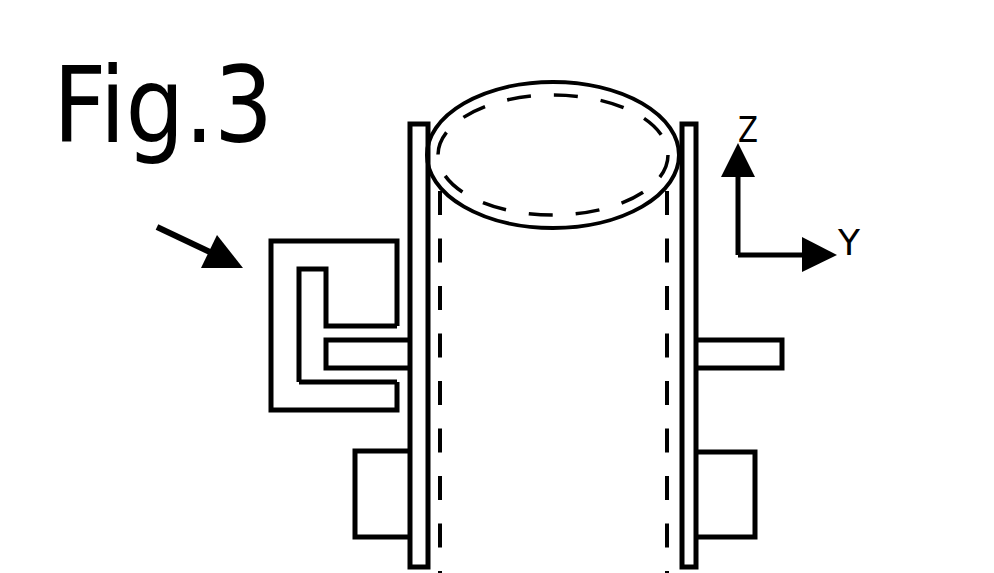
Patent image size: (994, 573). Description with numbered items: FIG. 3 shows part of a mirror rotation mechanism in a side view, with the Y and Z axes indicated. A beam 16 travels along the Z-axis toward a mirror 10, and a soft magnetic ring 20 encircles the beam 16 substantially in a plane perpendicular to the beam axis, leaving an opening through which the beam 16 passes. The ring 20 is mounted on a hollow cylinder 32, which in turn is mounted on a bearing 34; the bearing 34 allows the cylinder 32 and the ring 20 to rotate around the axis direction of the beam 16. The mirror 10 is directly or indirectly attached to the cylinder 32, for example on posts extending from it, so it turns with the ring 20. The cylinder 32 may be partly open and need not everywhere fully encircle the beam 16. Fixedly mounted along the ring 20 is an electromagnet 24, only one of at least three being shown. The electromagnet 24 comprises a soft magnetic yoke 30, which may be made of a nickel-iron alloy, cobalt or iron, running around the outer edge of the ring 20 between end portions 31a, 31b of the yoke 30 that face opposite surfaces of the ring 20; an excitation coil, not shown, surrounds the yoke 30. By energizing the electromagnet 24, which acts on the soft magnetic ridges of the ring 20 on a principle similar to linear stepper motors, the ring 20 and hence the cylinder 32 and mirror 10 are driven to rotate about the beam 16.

The mirror 10 is at (610, 82).
The beam 16 is at (668, 283).
The soft magnetic ring 20 is at (327, 353).
The electromagnet 24 is at (179, 233).
The soft magnetic yoke 30 is at (268, 326).
The end portion of yoke 31a is at (357, 322).
The end portion of yoke 31b is at (340, 384).
The hollow cylinder 32 is at (678, 553).
The bearing 34 is at (350, 510).